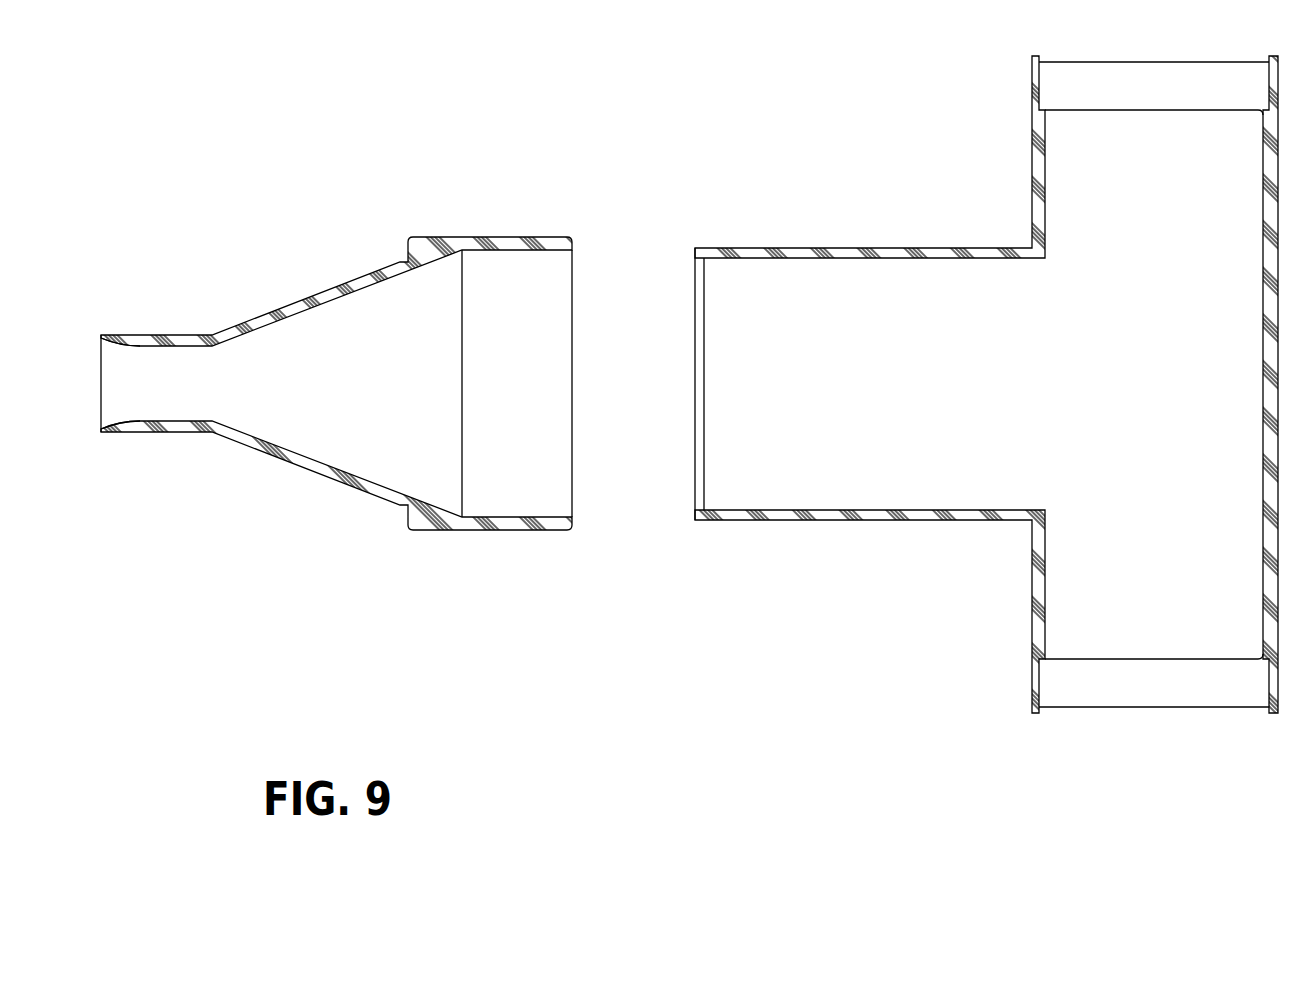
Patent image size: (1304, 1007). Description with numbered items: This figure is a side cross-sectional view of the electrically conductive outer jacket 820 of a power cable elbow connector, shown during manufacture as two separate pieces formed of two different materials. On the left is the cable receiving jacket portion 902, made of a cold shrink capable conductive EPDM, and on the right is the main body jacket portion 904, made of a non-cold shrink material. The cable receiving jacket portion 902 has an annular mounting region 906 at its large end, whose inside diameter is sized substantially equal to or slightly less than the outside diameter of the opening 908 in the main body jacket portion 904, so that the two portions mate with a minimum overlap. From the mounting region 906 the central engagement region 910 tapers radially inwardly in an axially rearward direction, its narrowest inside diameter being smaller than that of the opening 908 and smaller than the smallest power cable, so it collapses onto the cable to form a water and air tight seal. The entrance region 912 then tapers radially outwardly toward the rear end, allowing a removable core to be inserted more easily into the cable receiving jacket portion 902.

The cable receiving jacket portion 902 is at (325, 505).
The main body jacket portion 904 is at (915, 208).
The annular mounting region 906 is at (540, 247).
The opening 908 is at (713, 520).
The central engagement region 910 is at (195, 428).
The entrance region 912 is at (113, 342).
The outer jacket 820 is at (726, 667).